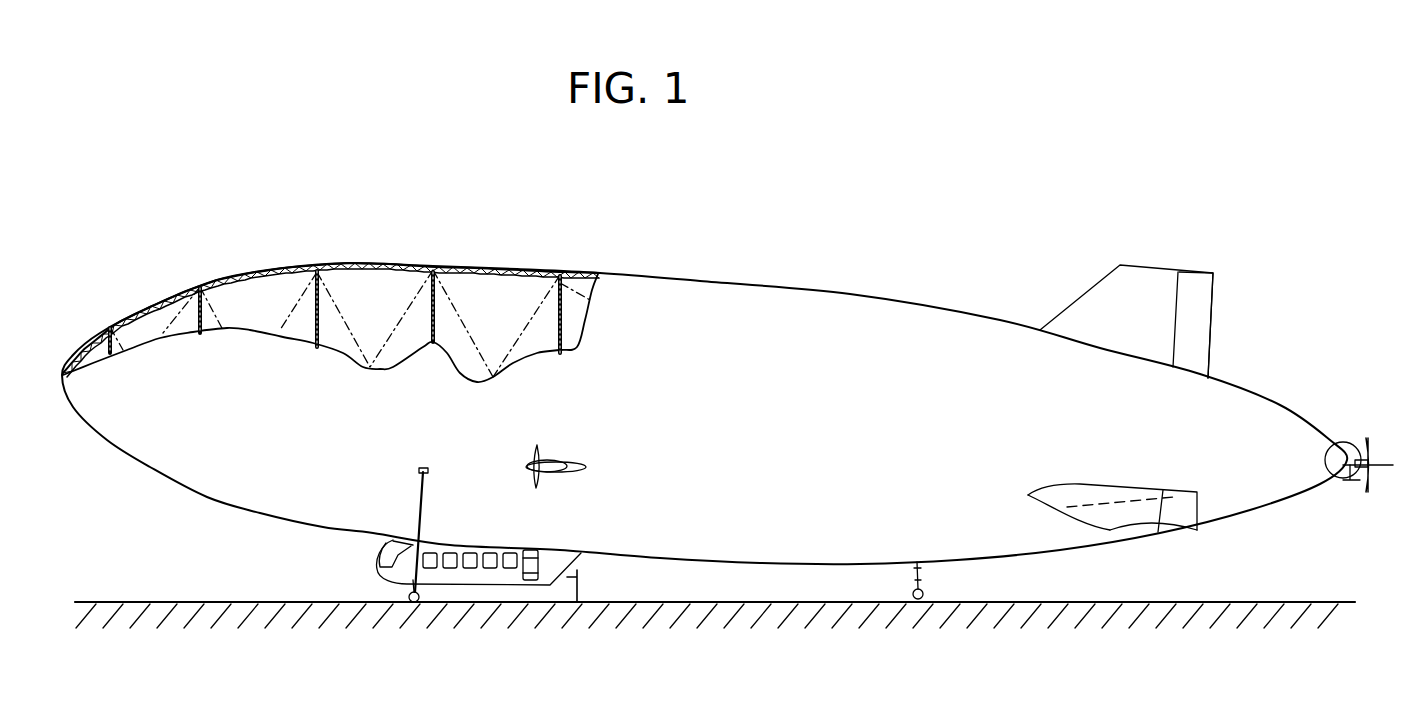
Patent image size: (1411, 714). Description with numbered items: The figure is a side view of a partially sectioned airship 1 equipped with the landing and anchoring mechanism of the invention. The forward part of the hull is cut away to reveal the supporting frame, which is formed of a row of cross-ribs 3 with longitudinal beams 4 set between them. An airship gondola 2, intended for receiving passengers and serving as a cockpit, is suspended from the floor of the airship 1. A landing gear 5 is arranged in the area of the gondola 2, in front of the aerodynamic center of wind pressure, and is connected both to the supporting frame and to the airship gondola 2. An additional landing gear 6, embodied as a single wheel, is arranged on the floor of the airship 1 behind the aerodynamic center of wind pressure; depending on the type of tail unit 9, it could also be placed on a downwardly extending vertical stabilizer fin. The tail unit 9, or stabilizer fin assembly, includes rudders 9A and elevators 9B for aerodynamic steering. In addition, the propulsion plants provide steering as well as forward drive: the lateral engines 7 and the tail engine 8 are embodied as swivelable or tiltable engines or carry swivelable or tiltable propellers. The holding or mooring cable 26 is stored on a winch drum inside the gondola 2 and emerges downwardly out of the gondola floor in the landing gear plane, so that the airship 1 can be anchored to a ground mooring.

The airship 1 is at (738, 241).
The airship gondola 2 is at (487, 578).
The cross-ribs 3 is at (432, 268).
The longitudinal beams 4 is at (390, 262).
The landing gear 5 is at (397, 589).
The additional landing gear 6 is at (912, 597).
The lateral engines 7 is at (565, 478).
The tail engine 8 is at (1360, 497).
The tail unit 9 is at (1086, 279).
The rudders 9A is at (1195, 306).
The elevators 9B is at (1197, 531).
The holding cable 26 is at (426, 498).